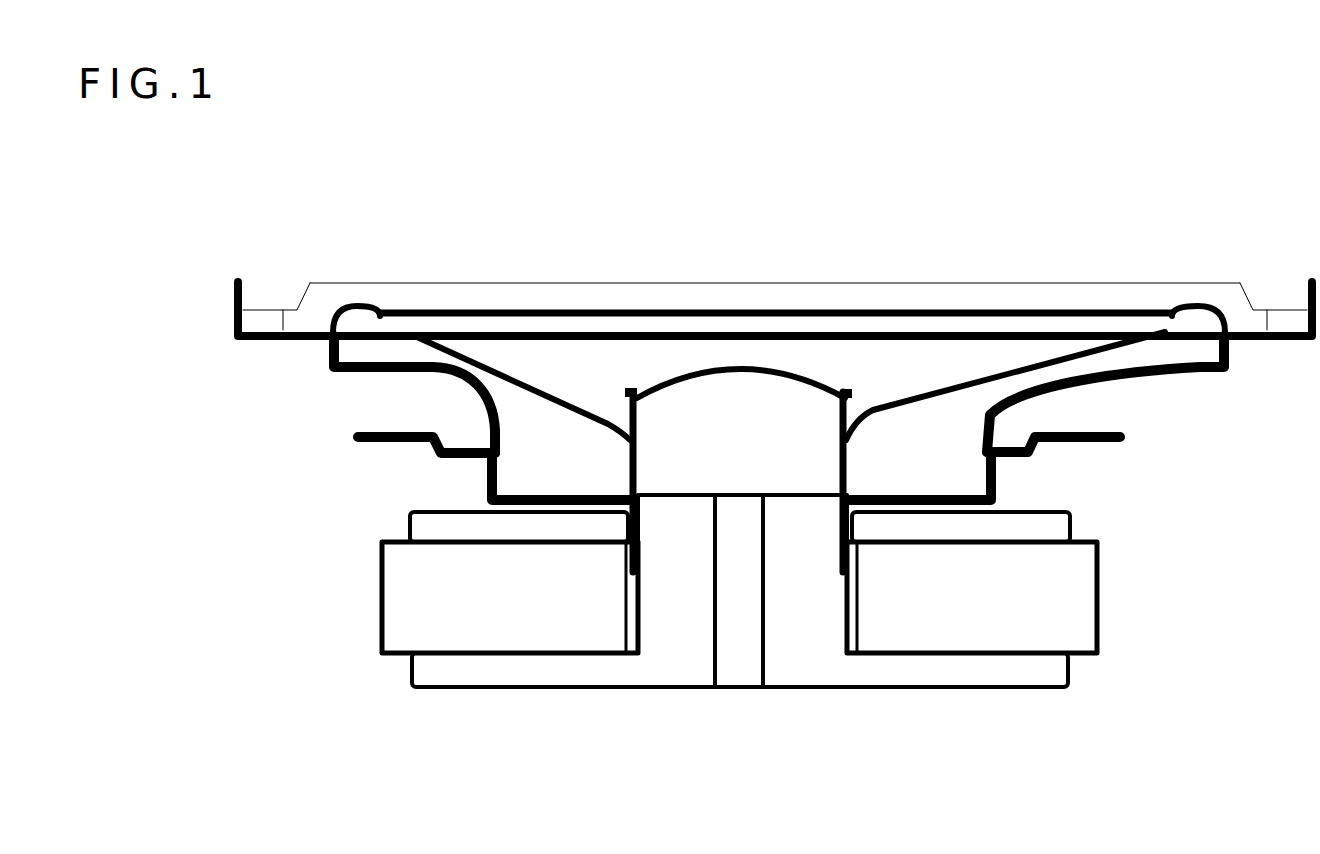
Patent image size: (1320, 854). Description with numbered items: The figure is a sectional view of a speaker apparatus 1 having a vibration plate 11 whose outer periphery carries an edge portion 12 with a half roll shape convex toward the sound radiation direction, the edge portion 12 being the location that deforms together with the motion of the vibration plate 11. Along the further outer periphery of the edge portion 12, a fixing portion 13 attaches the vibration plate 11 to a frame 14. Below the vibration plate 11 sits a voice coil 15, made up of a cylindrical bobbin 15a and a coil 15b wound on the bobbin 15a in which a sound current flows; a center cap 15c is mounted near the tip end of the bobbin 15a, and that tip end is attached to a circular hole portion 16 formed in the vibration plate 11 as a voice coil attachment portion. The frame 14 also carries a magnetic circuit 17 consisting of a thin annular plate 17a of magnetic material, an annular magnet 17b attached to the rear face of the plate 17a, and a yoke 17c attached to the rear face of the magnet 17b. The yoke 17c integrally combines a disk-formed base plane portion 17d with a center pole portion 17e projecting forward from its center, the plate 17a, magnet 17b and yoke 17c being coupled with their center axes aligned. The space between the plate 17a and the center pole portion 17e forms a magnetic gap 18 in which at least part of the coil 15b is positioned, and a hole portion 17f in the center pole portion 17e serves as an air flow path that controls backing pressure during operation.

The speaker apparatus 1 is at (760, 179).
The vibration plate 11 is at (977, 378).
The edge portion 12 is at (1208, 305).
The fixing portion 13 is at (318, 325).
The frame 14 is at (348, 380).
The voice coil 15 is at (855, 380).
The bobbin 15a is at (633, 460).
The coil 15b is at (632, 580).
The center cap 15c is at (740, 365).
The hole portion 16 is at (802, 441).
The magnetic circuit 17 is at (1132, 533).
The plate 17a is at (410, 528).
The magnet 17b is at (1060, 593).
The yoke 17c is at (1129, 670).
The base plane portion 17d is at (520, 689).
The center pole portion 17e is at (800, 636).
The hole portion 17f is at (745, 636).
The magnetic gap 18 is at (643, 484).